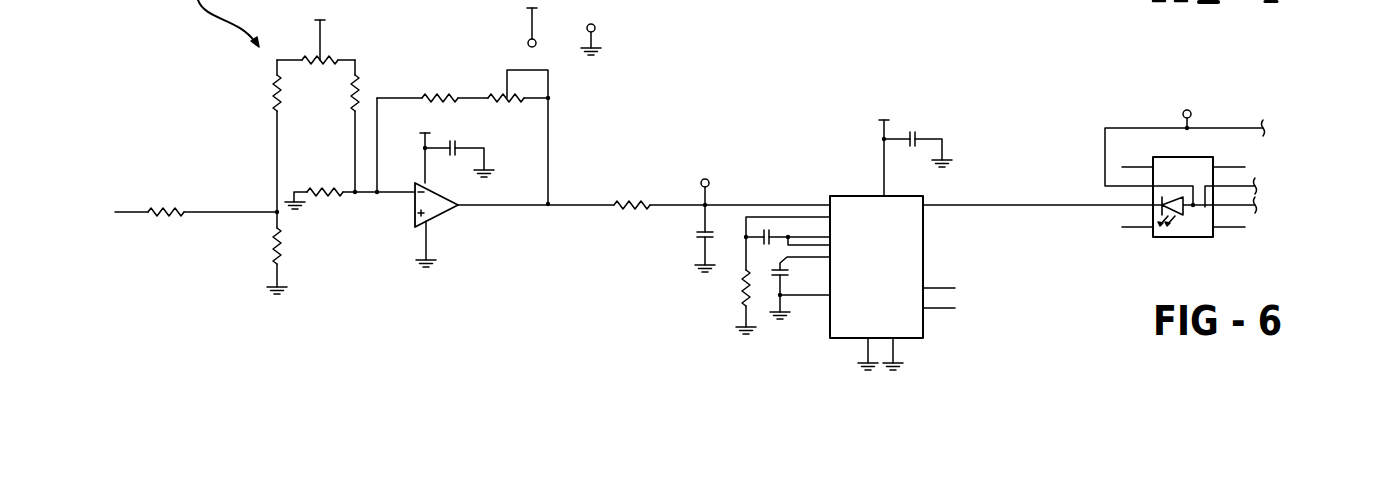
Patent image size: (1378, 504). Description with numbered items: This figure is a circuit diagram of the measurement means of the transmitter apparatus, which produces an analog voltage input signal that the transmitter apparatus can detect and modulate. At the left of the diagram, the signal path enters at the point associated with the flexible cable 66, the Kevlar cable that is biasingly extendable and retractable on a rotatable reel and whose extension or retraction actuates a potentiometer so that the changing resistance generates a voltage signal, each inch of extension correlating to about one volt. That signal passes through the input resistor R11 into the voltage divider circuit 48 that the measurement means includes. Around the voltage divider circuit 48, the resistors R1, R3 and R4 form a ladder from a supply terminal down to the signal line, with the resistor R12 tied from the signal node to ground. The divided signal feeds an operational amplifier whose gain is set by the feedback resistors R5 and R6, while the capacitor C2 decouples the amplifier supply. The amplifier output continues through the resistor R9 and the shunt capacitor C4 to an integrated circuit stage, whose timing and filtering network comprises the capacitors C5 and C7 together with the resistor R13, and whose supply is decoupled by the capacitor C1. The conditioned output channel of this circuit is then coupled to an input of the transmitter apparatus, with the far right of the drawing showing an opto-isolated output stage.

The flexible cable 66 is at (159, 176).
The voltage divider circuit 48 is at (182, 262).
The resistor R11 is at (166, 221).
The resistor R1 is at (317, 53).
The resistor R3 is at (285, 93).
The resistor R4 is at (346, 93).
The resistor R5 is at (440, 91).
The resistor R6 is at (506, 91).
The resistor R9 is at (632, 197).
The resistor R12 is at (290, 246).
The resistor R13 is at (733, 288).
The capacitor C1 is at (911, 131).
The capacitor C2 is at (453, 140).
The capacitor C4 is at (692, 238).
The capacitor C5 is at (769, 274).
The capacitor C7 is at (764, 245).